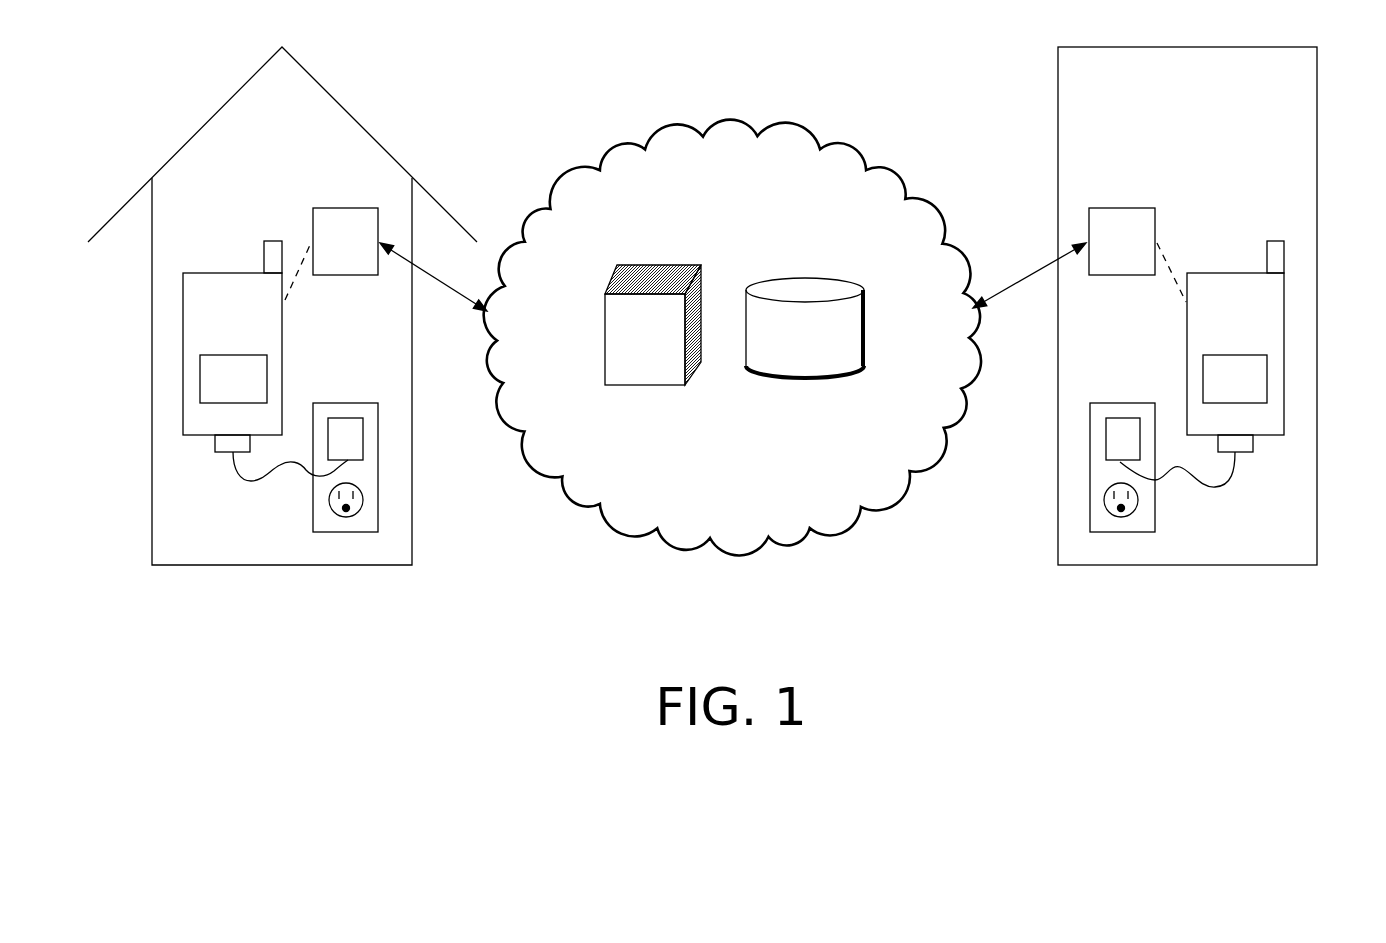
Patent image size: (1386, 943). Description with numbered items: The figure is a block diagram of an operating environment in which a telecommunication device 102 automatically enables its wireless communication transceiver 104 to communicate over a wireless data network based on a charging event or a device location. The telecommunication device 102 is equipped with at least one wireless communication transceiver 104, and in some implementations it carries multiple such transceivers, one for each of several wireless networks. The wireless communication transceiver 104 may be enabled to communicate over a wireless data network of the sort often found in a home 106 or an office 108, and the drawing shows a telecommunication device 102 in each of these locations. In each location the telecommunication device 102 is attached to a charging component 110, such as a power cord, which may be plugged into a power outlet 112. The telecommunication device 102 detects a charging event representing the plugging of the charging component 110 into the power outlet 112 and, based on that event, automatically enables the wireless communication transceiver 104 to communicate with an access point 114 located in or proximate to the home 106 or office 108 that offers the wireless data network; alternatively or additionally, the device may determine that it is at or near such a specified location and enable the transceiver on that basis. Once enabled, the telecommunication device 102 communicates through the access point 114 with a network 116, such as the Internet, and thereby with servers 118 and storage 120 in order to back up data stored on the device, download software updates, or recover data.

The telecommunication device 102 is at (183, 355).
The wireless communication transceiver 104 is at (267, 378).
The home 106 is at (338, 168).
The office 108 is at (1244, 108).
The charging component 110 is at (365, 440).
The power outlet 112 is at (347, 533).
The access point 114 is at (363, 208).
The network 116 is at (794, 204).
The servers 118 is at (703, 416).
The storage 120 is at (865, 416).